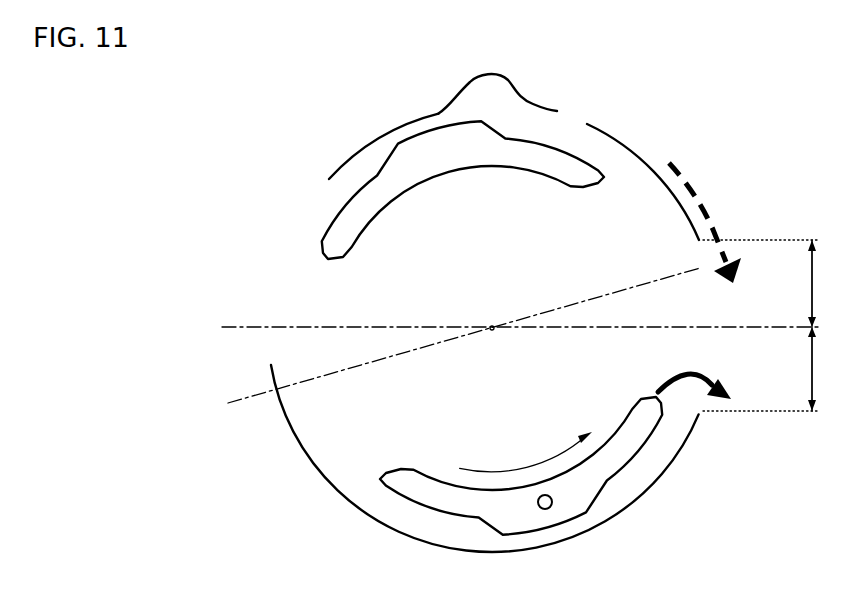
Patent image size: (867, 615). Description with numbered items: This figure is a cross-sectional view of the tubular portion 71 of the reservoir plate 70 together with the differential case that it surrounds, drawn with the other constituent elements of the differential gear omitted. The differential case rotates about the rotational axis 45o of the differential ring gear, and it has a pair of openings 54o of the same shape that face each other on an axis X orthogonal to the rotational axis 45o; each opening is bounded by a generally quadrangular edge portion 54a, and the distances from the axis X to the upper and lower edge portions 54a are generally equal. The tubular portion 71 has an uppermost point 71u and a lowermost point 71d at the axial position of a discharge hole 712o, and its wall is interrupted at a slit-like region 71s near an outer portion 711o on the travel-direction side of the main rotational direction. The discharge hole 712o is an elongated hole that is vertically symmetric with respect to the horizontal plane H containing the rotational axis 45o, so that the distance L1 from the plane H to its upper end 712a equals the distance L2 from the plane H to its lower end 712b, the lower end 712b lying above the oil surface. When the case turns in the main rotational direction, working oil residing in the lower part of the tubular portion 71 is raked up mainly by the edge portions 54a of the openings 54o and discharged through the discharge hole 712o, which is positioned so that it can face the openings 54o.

The reservoir plate 70 is at (326, 143).
The tubular portion 71 is at (650, 160).
The uppermost point 71u is at (491, 73).
The lowermost point 71d is at (487, 551).
The slit 71s is at (296, 216).
The first outer portion 711o is at (589, 114).
The discharge hole 712o is at (712, 319).
The upper end 712a is at (697, 240).
The lower end 712b is at (700, 414).
The openings 54o is at (468, 158).
The edge portions 54a is at (343, 259).
The rotational axis 45o is at (494, 331).
The horizontal plane H is at (227, 329).
The axis X is at (229, 404).
The distance L1 is at (829, 283).
The distance L2 is at (829, 369).